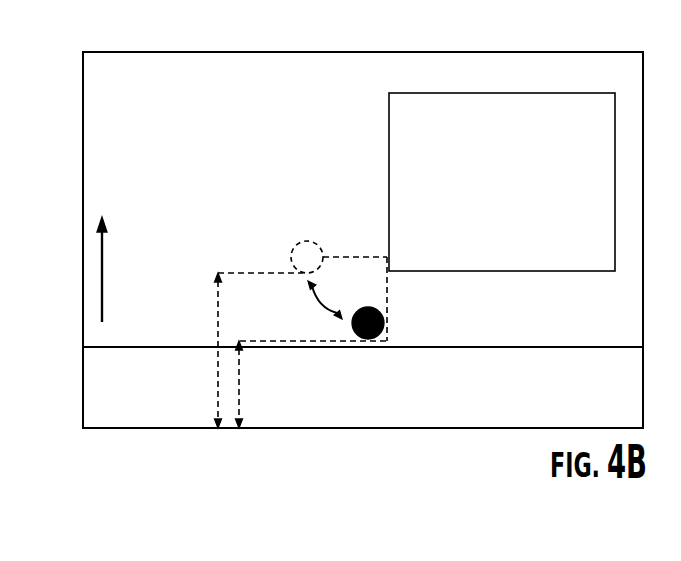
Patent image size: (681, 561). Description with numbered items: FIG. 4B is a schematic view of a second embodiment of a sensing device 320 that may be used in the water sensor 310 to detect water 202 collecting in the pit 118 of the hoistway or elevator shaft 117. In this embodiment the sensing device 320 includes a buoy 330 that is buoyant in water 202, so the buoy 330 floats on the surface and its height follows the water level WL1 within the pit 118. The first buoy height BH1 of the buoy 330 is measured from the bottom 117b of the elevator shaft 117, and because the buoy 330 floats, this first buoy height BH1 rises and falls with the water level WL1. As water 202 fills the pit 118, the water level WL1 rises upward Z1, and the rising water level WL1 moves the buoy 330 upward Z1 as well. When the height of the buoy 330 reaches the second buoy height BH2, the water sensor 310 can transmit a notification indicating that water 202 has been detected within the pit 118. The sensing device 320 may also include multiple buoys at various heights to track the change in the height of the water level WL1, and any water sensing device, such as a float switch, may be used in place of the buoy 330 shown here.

The elevator shaft 117 is at (158, 113).
The pit 118 is at (113, 122).
The sensing device 320 is at (118, 194).
The upward direction Z1 is at (102, 280).
The water level WL1 is at (480, 347).
The water sensor 310 is at (570, 271).
The second buoy height BH2 is at (228, 273).
The first buoy height BH1 is at (310, 342).
The buoy 330 is at (385, 323).
The water 202 is at (628, 389).
The bottom of the elevator shaft 117b is at (437, 428).